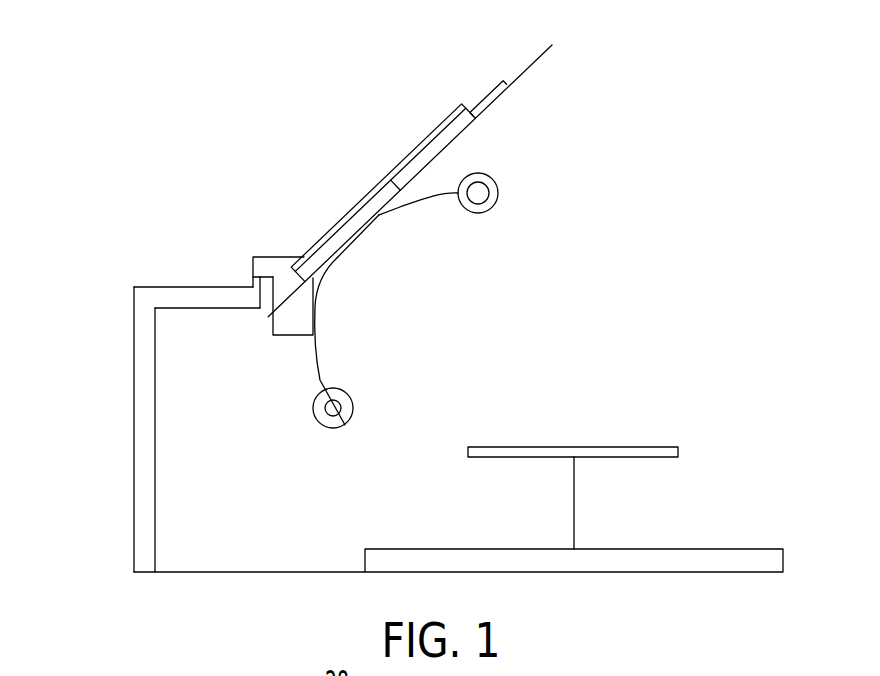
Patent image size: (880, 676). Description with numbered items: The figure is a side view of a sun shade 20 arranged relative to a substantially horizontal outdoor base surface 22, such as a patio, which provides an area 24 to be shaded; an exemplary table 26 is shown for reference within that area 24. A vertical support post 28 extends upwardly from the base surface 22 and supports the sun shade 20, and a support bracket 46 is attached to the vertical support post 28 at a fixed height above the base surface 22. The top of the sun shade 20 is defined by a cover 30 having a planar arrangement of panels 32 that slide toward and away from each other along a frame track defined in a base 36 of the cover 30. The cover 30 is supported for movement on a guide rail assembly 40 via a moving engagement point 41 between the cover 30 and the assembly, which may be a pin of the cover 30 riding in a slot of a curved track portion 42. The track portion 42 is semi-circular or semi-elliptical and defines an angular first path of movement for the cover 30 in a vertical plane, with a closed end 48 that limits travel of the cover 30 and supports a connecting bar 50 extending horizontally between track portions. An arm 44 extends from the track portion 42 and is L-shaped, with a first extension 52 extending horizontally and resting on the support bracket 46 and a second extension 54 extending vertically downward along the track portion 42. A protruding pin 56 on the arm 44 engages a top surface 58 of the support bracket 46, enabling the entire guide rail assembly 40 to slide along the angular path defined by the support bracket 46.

The sun shade 20 is at (181, 133).
The base surface 22 is at (198, 573).
The area 24 is at (592, 372).
The table 26 is at (678, 451).
The vertical support post 28 is at (143, 445).
The cover 30 is at (528, 65).
The panels 32 is at (405, 160).
The base 36 is at (500, 97).
The guide rail assembly 40 is at (412, 199).
The moving engagement point 41 is at (372, 225).
The track portion 42 is at (320, 362).
The arm 44 is at (302, 311).
The support bracket 46 is at (180, 298).
The closed end 48 is at (498, 190).
The connecting bar 50 is at (353, 408).
The first extension 52 is at (268, 270).
The second extension 54 is at (282, 325).
The protruding pin 56 is at (258, 287).
The top surface 58 is at (195, 286).